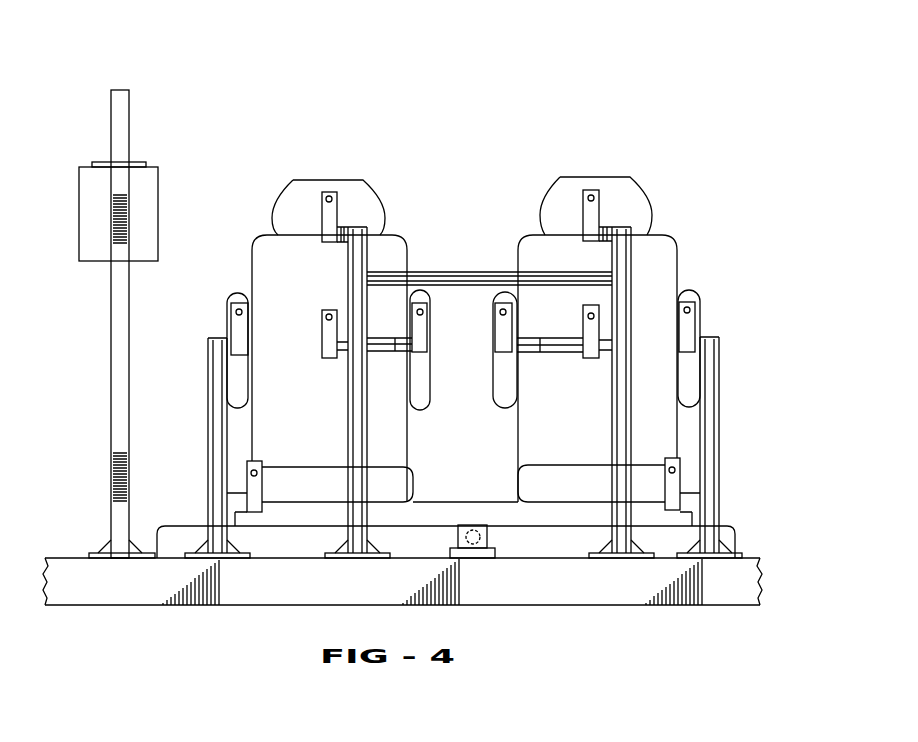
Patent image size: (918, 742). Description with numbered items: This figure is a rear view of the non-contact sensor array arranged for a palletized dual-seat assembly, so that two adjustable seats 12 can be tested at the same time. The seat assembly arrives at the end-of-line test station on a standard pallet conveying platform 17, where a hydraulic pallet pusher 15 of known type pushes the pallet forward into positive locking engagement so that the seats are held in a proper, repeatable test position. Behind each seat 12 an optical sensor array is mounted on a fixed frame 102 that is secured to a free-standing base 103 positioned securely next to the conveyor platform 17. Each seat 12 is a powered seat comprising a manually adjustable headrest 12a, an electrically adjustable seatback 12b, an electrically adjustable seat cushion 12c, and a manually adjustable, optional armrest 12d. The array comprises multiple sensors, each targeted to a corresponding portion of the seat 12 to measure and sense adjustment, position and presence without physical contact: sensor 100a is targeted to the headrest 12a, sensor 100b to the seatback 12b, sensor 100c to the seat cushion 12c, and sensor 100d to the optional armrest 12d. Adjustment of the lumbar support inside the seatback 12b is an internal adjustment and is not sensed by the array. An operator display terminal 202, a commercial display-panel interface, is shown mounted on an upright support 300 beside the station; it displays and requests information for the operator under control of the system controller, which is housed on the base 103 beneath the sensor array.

The pole 300 is at (120, 128).
The operator display terminal 202 is at (153, 195).
The seat 12 is at (489, 306).
The headrest 12a is at (352, 190).
The seatback 12b is at (263, 280).
The seat cushion 12c is at (540, 488).
The armrest 12d is at (420, 290).
The fixed frame 102 is at (478, 275).
The sensor 100a is at (325, 205).
The sensor 100b is at (325, 335).
The sensor 100c is at (678, 480).
The sensor 100d is at (236, 325).
The pallet pusher 15 is at (473, 545).
The free-standing base 103 is at (300, 595).
The pallet conveying platform 17 is at (720, 605).